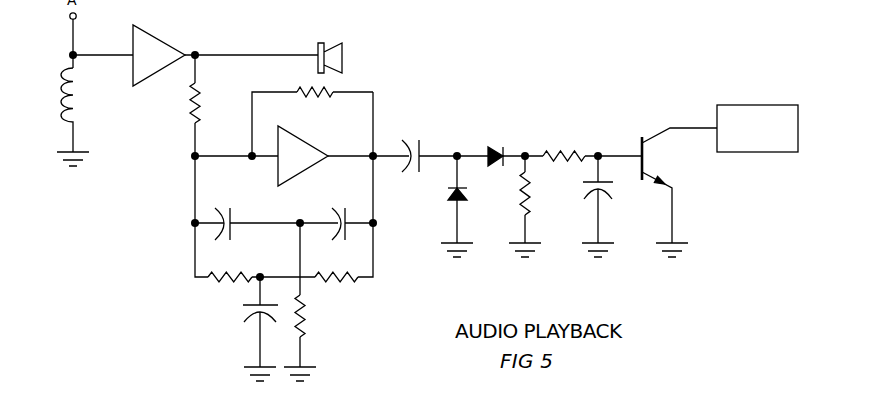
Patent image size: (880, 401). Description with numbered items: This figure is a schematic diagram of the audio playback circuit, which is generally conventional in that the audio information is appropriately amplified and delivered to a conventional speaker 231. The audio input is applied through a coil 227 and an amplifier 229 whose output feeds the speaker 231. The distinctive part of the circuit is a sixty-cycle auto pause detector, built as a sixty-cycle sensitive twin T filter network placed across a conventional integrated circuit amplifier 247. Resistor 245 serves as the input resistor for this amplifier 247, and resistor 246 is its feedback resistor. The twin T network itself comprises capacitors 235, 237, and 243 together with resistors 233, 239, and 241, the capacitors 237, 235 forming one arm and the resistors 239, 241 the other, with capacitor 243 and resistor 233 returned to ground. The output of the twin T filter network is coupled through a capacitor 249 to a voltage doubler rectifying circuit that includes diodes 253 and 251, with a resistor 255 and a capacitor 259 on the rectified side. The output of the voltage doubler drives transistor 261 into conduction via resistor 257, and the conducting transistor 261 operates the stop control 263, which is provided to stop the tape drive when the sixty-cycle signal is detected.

The inductor 227 is at (80, 110).
The amplifier 229 is at (159, 53).
The speaker 231 is at (348, 58).
The resistor 233 is at (318, 316).
The capacitor 235 is at (337, 215).
The capacitor 237 is at (225, 215).
The resistor 239 is at (230, 267).
The resistor 241 is at (336, 267).
The capacitor 243 is at (243, 315).
The input resistor 245 is at (214, 103).
The feedback resistor 246 is at (306, 83).
The amplifier 247 is at (303, 149).
The coupling capacitor 249 is at (410, 147).
The diode 251 is at (495, 146).
The diode 253 is at (474, 192).
The resistor 255 is at (544, 193).
The resistor 257 is at (564, 147).
The capacitor 259 is at (616, 191).
The transistor 261 is at (679, 185).
The stop control 263 is at (757, 118).